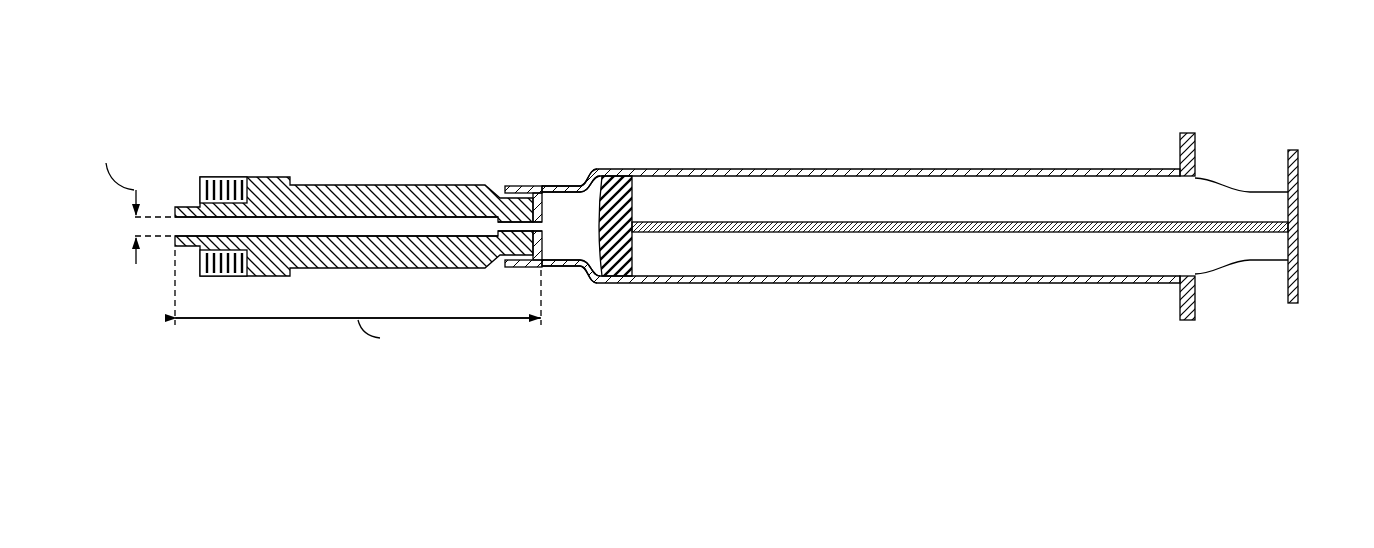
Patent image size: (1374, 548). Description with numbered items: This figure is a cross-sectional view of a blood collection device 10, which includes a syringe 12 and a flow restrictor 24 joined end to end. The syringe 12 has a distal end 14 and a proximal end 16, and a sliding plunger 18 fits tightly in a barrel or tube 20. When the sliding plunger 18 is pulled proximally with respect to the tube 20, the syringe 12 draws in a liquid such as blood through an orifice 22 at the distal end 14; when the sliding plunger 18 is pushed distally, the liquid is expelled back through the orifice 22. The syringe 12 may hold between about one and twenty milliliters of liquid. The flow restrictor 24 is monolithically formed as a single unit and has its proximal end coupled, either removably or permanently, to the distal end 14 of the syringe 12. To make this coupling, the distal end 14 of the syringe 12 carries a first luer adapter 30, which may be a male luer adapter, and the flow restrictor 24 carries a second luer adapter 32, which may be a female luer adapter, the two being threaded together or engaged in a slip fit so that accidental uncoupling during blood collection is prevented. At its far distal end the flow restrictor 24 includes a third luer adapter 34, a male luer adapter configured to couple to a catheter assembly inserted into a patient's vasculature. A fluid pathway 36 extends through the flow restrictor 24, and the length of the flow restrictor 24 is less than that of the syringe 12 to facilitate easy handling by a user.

The blood collection device 10 is at (1140, 31).
The syringe 12 is at (946, 166).
The distal end 14 is at (500, 191).
The proximal end 16 is at (1300, 175).
The sliding plunger 18 is at (1203, 262).
The tube 20 is at (952, 287).
The orifice 22 is at (500, 268).
The flow restrictor 24 is at (328, 175).
The first luer adapter 30 is at (547, 186).
The second luer adapter 32 is at (533, 243).
The third luer adapter 34 is at (200, 180).
The fluid pathway 36 is at (378, 226).